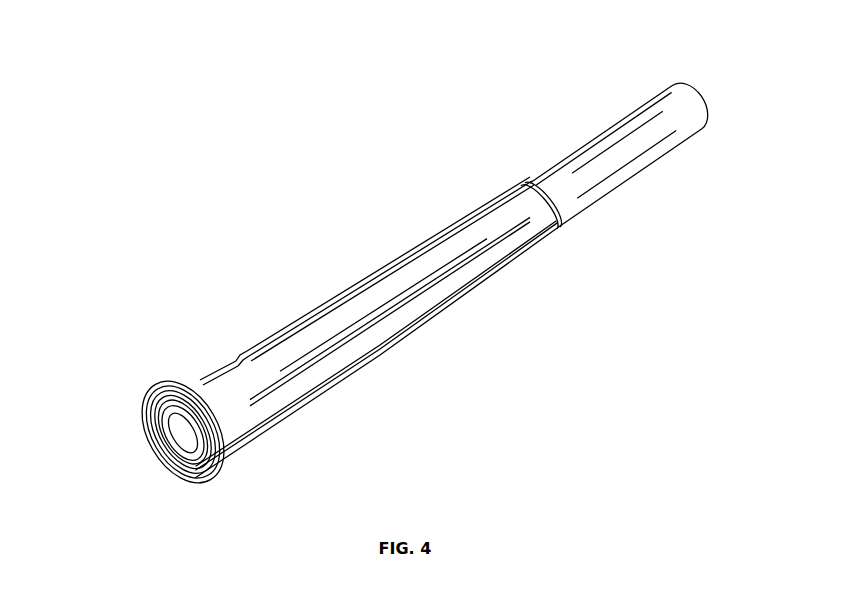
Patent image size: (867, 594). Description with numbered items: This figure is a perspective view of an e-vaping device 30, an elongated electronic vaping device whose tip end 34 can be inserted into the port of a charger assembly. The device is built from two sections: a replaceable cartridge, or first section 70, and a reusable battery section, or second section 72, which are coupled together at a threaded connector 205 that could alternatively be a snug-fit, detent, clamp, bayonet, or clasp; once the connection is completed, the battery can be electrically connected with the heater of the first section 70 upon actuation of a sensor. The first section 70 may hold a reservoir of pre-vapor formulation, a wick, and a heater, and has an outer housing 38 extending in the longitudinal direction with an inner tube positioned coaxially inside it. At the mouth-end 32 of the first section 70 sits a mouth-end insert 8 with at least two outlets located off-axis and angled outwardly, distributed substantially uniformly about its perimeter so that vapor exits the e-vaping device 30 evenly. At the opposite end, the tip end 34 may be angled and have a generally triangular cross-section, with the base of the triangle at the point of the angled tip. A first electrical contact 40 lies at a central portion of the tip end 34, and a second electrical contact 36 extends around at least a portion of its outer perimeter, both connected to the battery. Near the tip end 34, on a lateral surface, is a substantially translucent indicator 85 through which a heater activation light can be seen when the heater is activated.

The mouth-end insert 8 is at (700, 118).
The e-vaping device 30 is at (481, 207).
The mouth-end 32 is at (693, 97).
The tip end 34 is at (192, 387).
The second electrical contact 36 is at (202, 472).
The outer housing 38 is at (427, 267).
The first electrical contact 40 is at (183, 435).
The replaceable cartridge (first section) 70 is at (647, 167).
The reusable battery section (second section) 72 is at (347, 383).
The indicator 85 is at (235, 362).
The threaded connector 205 is at (560, 224).